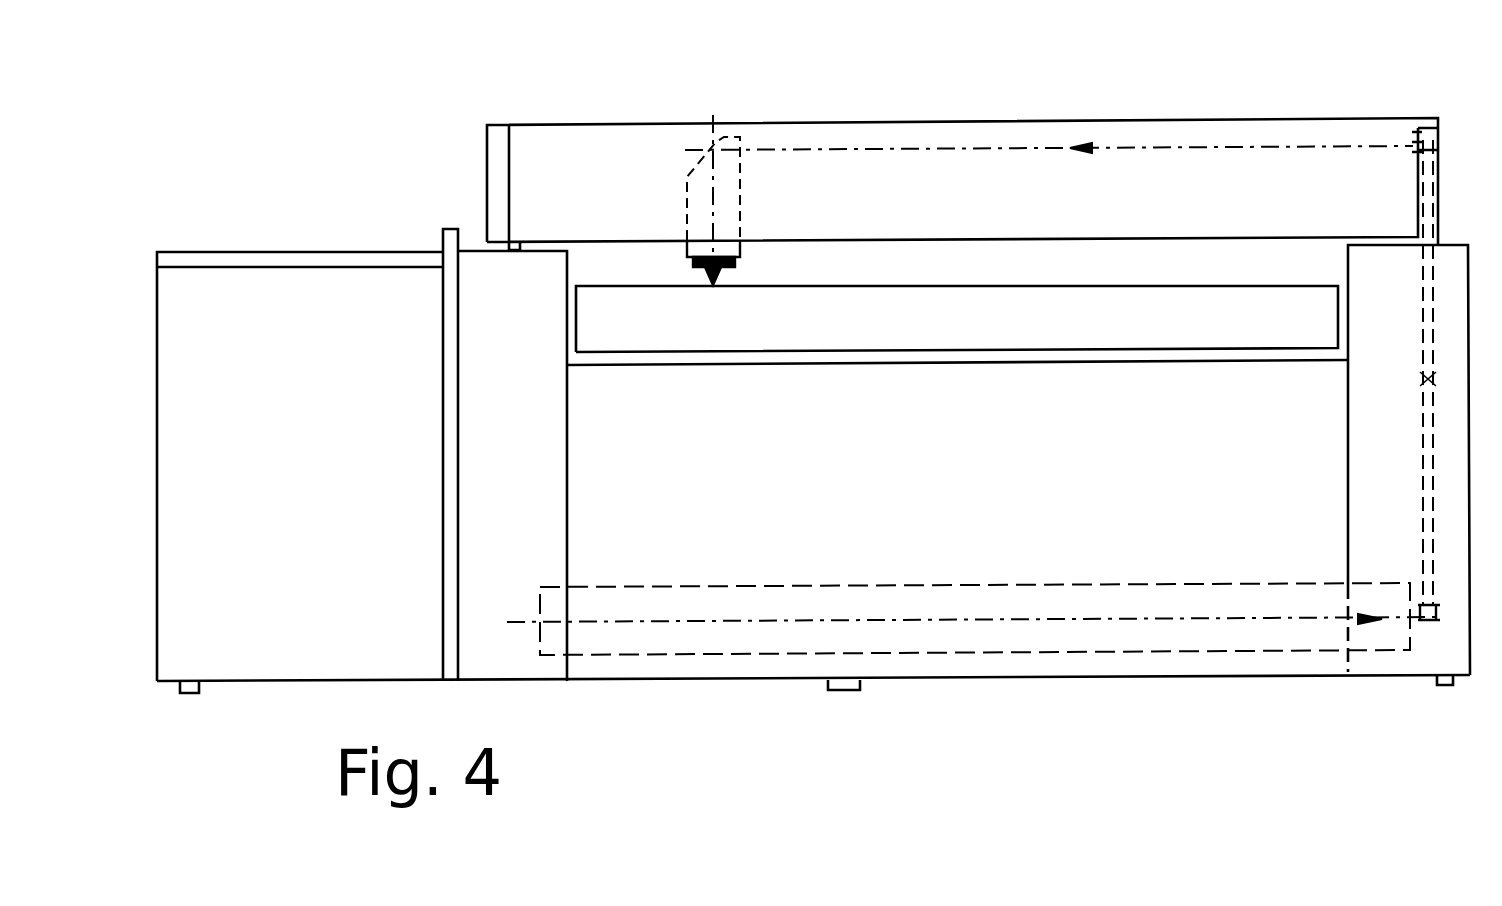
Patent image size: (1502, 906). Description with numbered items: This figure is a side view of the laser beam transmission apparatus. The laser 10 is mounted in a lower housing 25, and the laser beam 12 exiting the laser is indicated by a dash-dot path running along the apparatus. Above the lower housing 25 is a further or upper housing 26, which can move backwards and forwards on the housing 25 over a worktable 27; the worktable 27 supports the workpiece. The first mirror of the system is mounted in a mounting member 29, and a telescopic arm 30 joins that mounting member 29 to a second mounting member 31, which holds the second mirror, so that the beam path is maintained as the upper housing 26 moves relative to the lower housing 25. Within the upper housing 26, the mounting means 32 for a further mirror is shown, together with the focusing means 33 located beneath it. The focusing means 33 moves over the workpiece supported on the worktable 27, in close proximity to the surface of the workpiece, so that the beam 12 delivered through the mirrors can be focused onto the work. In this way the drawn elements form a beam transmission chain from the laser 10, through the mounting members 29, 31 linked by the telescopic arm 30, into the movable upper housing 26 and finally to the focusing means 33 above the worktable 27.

The laser 10 is at (922, 652).
The laser beam 12 is at (1145, 146).
The housing 25 is at (635, 682).
The upper housing 26 is at (572, 165).
The worktable 27 is at (933, 243).
The mounting member 29 is at (1433, 620).
The telescopic arm 30 is at (1422, 408).
The mounting member 31 is at (1420, 128).
The mounting means 32 is at (697, 188).
The focusing means 33 is at (740, 258).